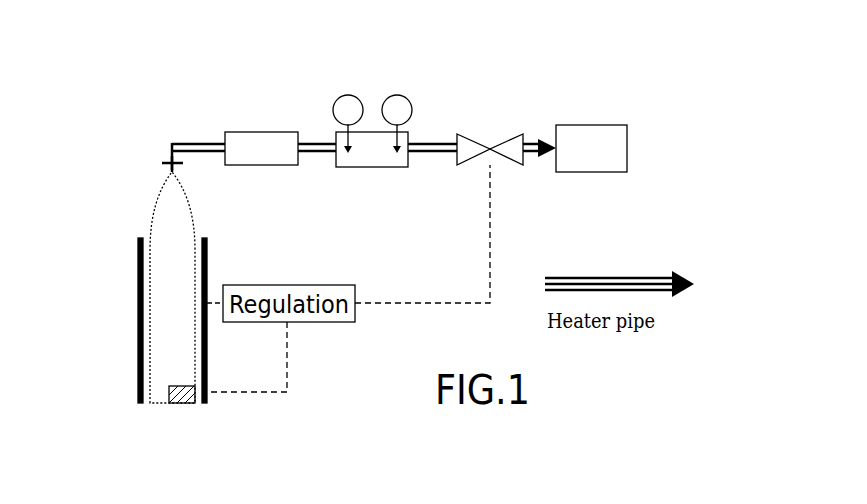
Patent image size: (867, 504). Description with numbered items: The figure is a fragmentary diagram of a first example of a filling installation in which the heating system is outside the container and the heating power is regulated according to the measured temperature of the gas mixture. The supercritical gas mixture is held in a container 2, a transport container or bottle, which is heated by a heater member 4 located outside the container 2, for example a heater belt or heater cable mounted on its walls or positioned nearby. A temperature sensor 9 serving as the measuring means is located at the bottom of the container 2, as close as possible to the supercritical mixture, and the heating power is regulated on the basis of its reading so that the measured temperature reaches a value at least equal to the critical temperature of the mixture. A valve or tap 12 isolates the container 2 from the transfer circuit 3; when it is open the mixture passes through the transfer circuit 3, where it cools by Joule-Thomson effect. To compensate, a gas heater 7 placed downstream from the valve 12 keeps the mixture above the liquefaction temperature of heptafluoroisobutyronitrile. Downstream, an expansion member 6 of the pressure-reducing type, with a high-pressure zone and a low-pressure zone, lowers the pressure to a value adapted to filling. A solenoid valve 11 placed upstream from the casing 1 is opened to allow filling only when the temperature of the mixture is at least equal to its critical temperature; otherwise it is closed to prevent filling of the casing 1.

The casing 1 is at (607, 130).
The container 2 is at (142, 213).
The transfer circuit 3 is at (164, 138).
The heater member 4 is at (128, 281).
The expansion member 6 is at (371, 122).
The gas heater 7 is at (262, 176).
The temperature sensor 9 is at (178, 418).
The solenoid valve 11 is at (497, 137).
The valve 12 is at (152, 162).